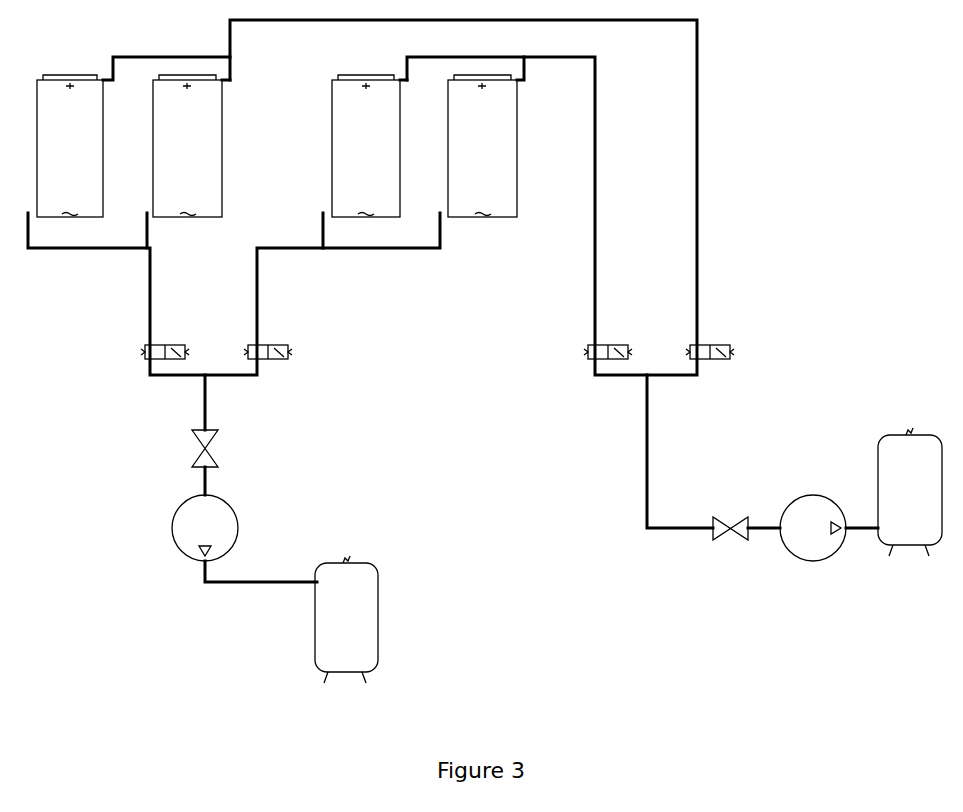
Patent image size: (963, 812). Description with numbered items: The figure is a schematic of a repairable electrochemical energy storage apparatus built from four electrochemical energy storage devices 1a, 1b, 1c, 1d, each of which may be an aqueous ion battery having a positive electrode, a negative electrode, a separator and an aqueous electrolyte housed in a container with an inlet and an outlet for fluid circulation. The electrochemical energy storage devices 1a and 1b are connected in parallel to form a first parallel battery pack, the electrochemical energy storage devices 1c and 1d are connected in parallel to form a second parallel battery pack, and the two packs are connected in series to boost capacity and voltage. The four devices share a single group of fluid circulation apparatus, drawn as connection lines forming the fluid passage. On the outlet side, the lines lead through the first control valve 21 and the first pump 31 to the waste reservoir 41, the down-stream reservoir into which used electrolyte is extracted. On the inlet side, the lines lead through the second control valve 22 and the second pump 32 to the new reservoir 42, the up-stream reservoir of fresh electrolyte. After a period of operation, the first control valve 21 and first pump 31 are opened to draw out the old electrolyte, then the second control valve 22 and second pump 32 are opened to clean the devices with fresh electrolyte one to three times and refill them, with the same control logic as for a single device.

The electrochemical energy storage device 1a is at (70, 146).
The electrochemical energy storage device 1b is at (187, 146).
The electrochemical energy storage device 1c is at (366, 146).
The electrochemical energy storage device 1d is at (482, 146).
The first control valve 21 is at (210, 447).
The second control valve 22 is at (725, 542).
The first pump 31 is at (230, 522).
The second pump 32 is at (812, 562).
The waste reservoir 41 is at (346, 619).
The new reservoir 42 is at (910, 492).